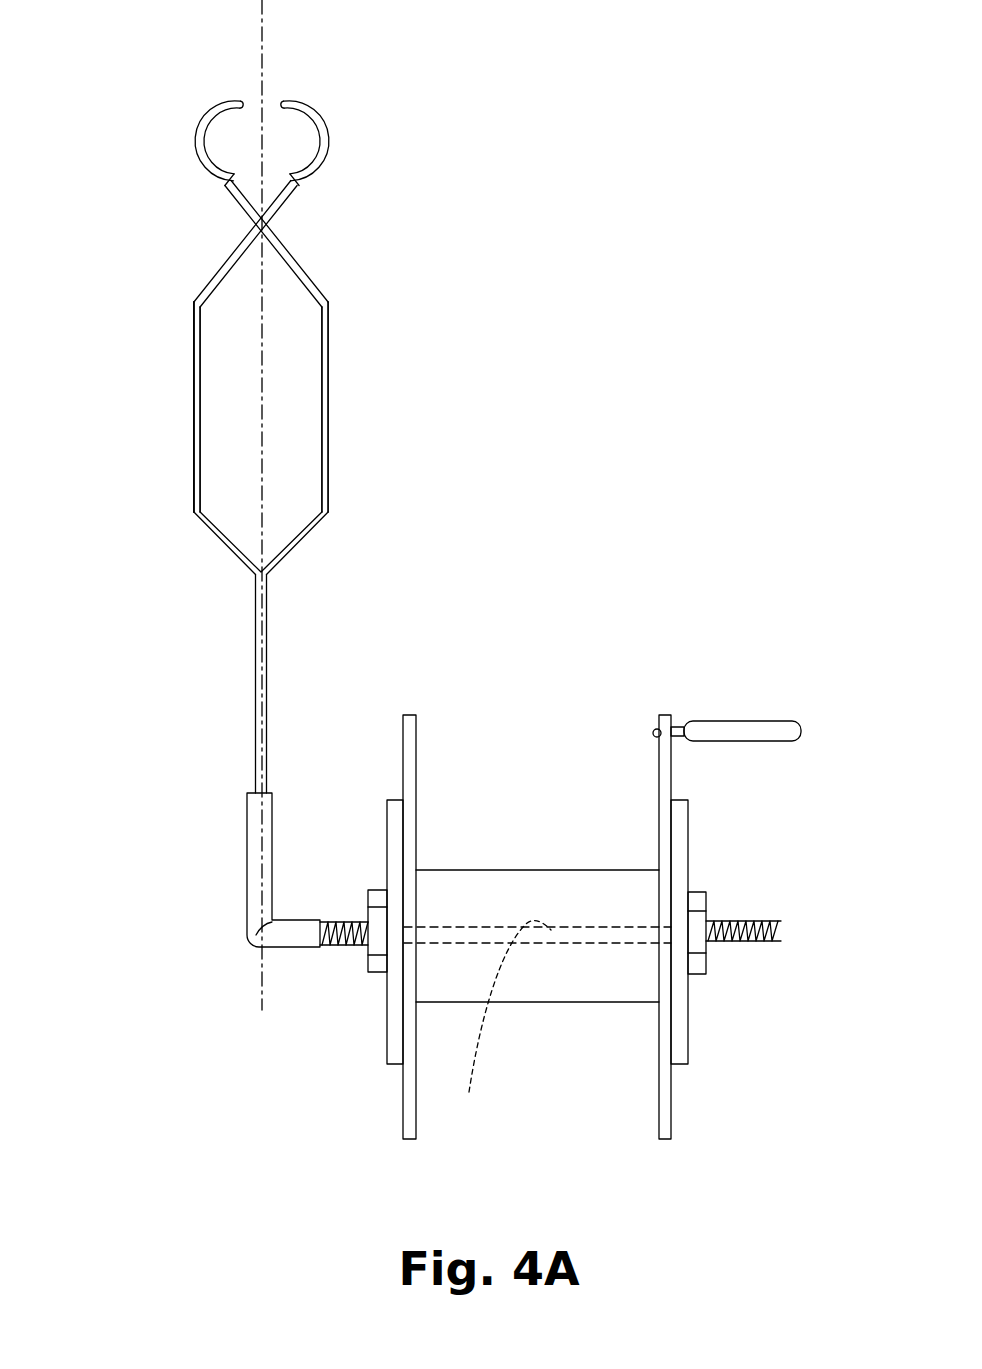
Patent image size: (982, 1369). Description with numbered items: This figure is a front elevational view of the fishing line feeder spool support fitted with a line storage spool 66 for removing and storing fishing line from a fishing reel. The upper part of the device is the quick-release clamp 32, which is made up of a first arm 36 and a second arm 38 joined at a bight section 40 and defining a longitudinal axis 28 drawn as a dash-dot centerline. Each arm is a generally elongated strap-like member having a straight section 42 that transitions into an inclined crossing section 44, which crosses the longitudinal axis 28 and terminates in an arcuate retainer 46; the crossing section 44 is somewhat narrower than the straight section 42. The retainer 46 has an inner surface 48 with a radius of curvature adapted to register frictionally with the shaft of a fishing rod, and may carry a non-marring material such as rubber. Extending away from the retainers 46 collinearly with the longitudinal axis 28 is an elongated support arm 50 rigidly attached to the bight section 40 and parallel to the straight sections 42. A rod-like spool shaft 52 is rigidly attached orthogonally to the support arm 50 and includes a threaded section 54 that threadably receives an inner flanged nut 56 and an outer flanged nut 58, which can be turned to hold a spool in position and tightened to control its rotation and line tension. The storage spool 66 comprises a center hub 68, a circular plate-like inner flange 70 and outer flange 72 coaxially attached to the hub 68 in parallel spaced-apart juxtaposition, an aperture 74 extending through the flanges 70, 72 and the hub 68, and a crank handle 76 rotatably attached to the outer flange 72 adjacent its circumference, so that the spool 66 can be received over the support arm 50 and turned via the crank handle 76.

The longitudinal axis 28 is at (263, 15).
The quick-release clamp 32 is at (352, 523).
The first arm 36 is at (328, 443).
The second arm 38 is at (191, 461).
The bight section 40 is at (224, 552).
The straight section 42 is at (193, 376).
The crossing section 44 is at (221, 272).
The arcuate retainer 46 is at (197, 145).
The inner surface 48 is at (213, 118).
The support arm 50 is at (268, 788).
The spool shaft 52 is at (314, 928).
The threaded section 54 is at (760, 922).
The inner flanged nut 56 is at (393, 977).
The outer flanged nut 58 is at (679, 874).
The line storage spool 66 is at (539, 830).
The center hub 68 is at (559, 895).
The inner flange 70 is at (413, 736).
The outer flange 72 is at (665, 715).
The aperture 74 is at (500, 1030).
The crank handle 76 is at (749, 729).